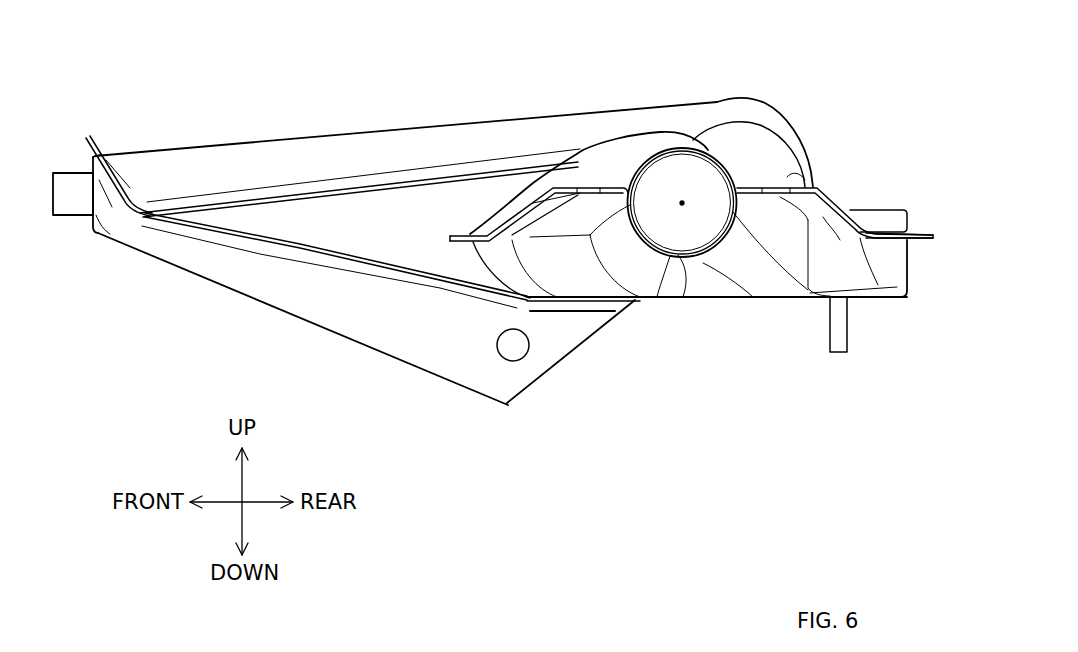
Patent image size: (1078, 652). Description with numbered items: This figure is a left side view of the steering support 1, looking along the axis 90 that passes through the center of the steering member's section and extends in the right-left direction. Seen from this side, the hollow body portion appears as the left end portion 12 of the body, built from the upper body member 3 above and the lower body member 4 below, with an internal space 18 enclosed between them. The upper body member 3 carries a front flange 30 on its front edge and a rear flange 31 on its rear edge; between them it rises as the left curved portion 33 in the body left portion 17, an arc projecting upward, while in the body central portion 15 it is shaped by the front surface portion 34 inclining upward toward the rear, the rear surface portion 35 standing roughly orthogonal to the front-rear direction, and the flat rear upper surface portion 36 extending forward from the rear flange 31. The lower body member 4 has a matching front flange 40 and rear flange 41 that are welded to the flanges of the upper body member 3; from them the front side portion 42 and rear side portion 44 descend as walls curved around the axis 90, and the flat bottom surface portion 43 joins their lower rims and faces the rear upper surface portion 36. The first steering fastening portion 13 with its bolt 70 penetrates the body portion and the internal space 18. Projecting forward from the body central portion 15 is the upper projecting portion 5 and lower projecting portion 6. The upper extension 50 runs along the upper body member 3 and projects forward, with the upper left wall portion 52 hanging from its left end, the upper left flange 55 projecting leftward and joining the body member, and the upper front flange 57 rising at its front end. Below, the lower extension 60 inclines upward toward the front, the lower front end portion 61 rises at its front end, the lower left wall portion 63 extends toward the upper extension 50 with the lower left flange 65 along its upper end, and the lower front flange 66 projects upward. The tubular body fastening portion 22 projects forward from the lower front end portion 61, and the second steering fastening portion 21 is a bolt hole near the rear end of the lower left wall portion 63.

The steering support 1 is at (213, 82).
The upper body member 3 is at (708, 146).
The lower body member 4 is at (680, 311).
The upper projecting portion 5 is at (380, 146).
The lower projecting portion 6 is at (365, 328).
The left end portion 12 is at (686, 300).
The first steering fastening portion 13 is at (842, 360).
The body central portion 15 is at (650, 213).
The body left portion 17 is at (802, 88).
The internal space 18 is at (695, 193).
The second steering fastening portion 21 is at (514, 346).
The body fastening portion 22 is at (77, 217).
The front flange 30 is at (473, 235).
The rear flange 31 is at (926, 225).
The left curved portion 33 is at (695, 145).
The front surface portion 34 is at (522, 192).
The rear surface portion 35 is at (818, 158).
The rear upper surface portion 36 is at (853, 200).
The front flange 40 is at (452, 239).
The rear flange 41 is at (823, 212).
The front side portion 42 is at (503, 265).
The bottom surface portion 43 is at (660, 300).
The rear side portion 44 is at (860, 258).
The upper extension 50 is at (473, 122).
The upper left wall portion 52 is at (333, 150).
The upper left flange 55 is at (430, 182).
The upper front flange 57 is at (102, 157).
The lower extension 60 is at (360, 345).
The lower front end portion 61 is at (103, 213).
The lower left wall portion 63 is at (258, 300).
The lower left flange 65 is at (317, 258).
The lower front flange 66 is at (94, 157).
The bolt 70 is at (835, 333).
The axis 90 is at (683, 206).